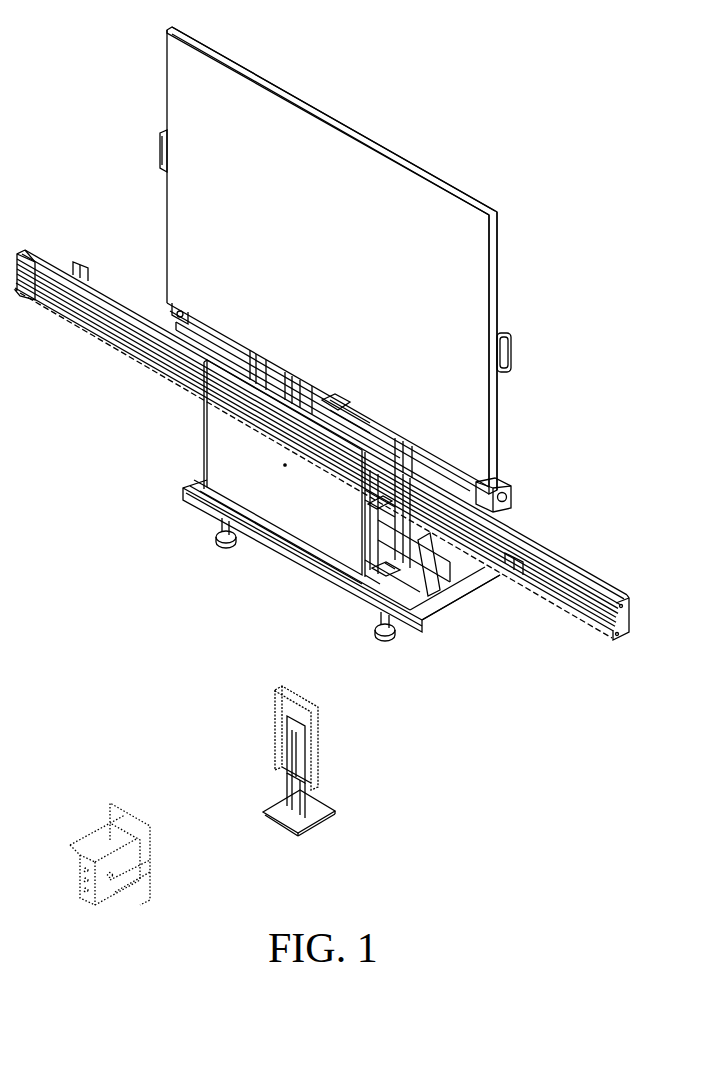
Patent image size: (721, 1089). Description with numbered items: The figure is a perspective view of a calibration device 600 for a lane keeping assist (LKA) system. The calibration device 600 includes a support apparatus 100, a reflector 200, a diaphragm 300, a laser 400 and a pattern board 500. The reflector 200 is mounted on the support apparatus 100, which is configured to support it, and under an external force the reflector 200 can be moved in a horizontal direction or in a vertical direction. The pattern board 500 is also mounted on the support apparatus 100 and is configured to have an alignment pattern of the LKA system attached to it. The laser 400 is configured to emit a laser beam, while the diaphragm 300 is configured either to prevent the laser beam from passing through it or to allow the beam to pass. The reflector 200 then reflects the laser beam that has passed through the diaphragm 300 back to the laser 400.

The support apparatus 100 is at (517, 522).
The reflector 200 is at (207, 456).
The diaphragm 300 is at (305, 712).
The laser 400 is at (140, 880).
The pattern board 500 is at (425, 198).
The calibration device 600 is at (428, 134).